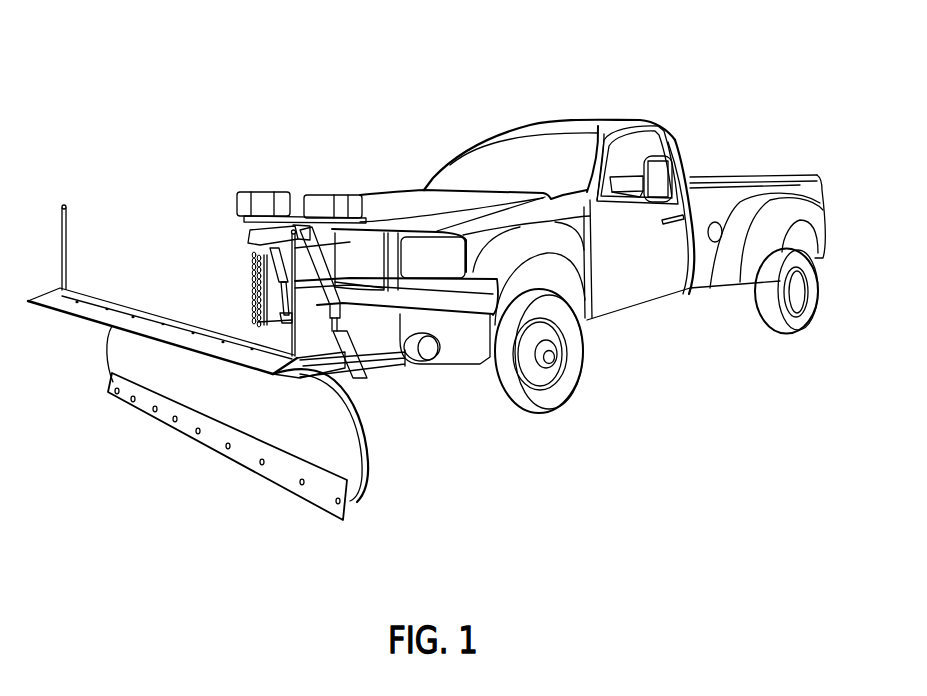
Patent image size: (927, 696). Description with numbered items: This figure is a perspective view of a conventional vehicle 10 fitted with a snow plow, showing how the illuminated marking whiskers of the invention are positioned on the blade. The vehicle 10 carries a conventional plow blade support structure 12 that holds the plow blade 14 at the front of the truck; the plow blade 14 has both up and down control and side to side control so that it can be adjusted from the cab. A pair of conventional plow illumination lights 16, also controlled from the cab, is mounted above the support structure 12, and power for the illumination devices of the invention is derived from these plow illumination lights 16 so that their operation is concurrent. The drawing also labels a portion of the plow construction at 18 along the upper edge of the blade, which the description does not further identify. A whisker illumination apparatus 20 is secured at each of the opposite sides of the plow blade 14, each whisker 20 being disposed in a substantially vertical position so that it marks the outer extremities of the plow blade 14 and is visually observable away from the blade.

The vehicle 10 is at (556, 118).
The plow blade support structure 12 is at (378, 378).
The plow blade 14 is at (275, 490).
The plow illumination lights 16 is at (283, 182).
The blade top edge (top flange) 18 is at (86, 310).
The whisker illumination apparatus 20 is at (68, 232).